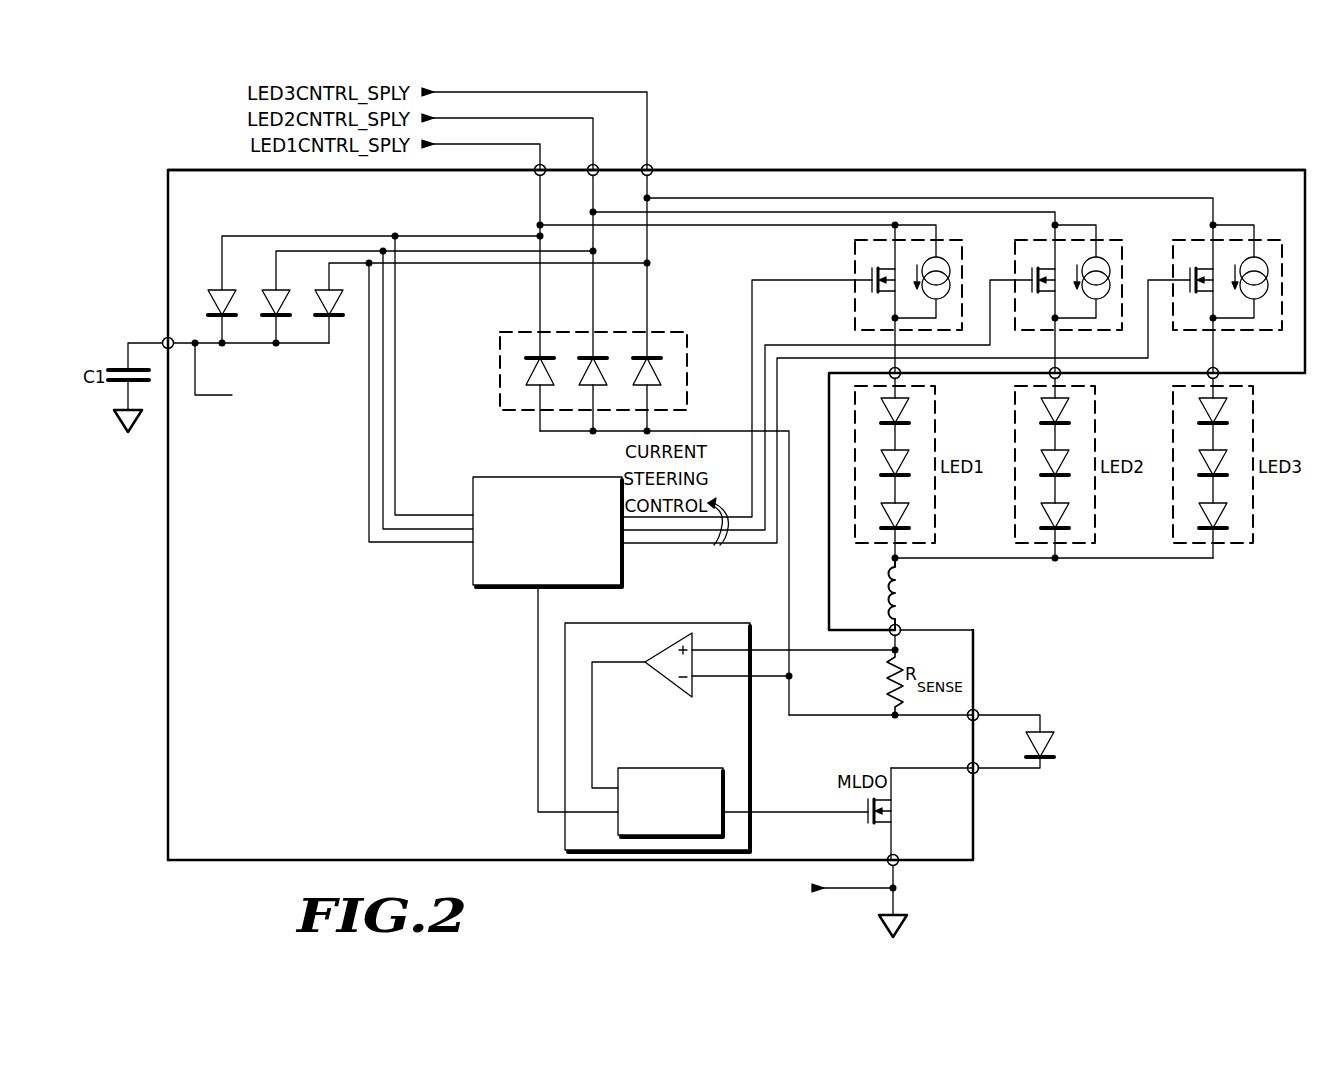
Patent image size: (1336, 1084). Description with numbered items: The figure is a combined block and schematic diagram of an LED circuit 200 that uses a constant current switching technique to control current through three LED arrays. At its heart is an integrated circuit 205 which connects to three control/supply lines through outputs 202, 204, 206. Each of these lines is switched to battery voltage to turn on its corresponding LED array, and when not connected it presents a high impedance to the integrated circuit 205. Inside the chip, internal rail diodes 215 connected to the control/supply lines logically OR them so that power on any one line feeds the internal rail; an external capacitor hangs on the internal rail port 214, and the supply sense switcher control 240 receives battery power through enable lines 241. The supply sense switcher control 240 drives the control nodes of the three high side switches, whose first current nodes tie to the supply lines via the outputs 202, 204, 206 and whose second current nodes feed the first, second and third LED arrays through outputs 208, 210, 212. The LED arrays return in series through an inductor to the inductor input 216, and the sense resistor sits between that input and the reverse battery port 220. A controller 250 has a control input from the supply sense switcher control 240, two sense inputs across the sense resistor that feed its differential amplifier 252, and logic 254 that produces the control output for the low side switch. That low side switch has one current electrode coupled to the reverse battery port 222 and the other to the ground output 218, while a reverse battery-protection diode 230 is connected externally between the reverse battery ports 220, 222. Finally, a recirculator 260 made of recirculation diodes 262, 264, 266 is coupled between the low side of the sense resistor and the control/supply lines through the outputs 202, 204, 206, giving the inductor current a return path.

The LED circuit 200 is at (1246, 129).
The output 202 is at (544, 165).
The output 204 is at (597, 165).
The output 206 is at (651, 165).
The integrated circuit 205 is at (265, 820).
The output 208 is at (900, 378).
The output 210 is at (1060, 378).
The output 212 is at (1218, 378).
The internal rail port 214 is at (163, 338).
The internal rail diodes 215 is at (318, 291).
The inductor input 216 is at (901, 624).
The ground output 218 is at (897, 866).
The reverse battery port 220 is at (979, 709).
The reverse battery port 222 is at (979, 775).
The reverse battery-protection diode 230 is at (1046, 740).
The supply sense switcher control 240 is at (502, 588).
The enable lines 241 is at (420, 548).
The controller 250 is at (730, 721).
The differential amplifier 252 is at (663, 682).
The logic 254 is at (660, 764).
The recirculator 260 is at (566, 363).
The recirculation diode 262 is at (528, 352).
The recirculation diode 264 is at (581, 352).
The recirculation diode 266 is at (635, 352).